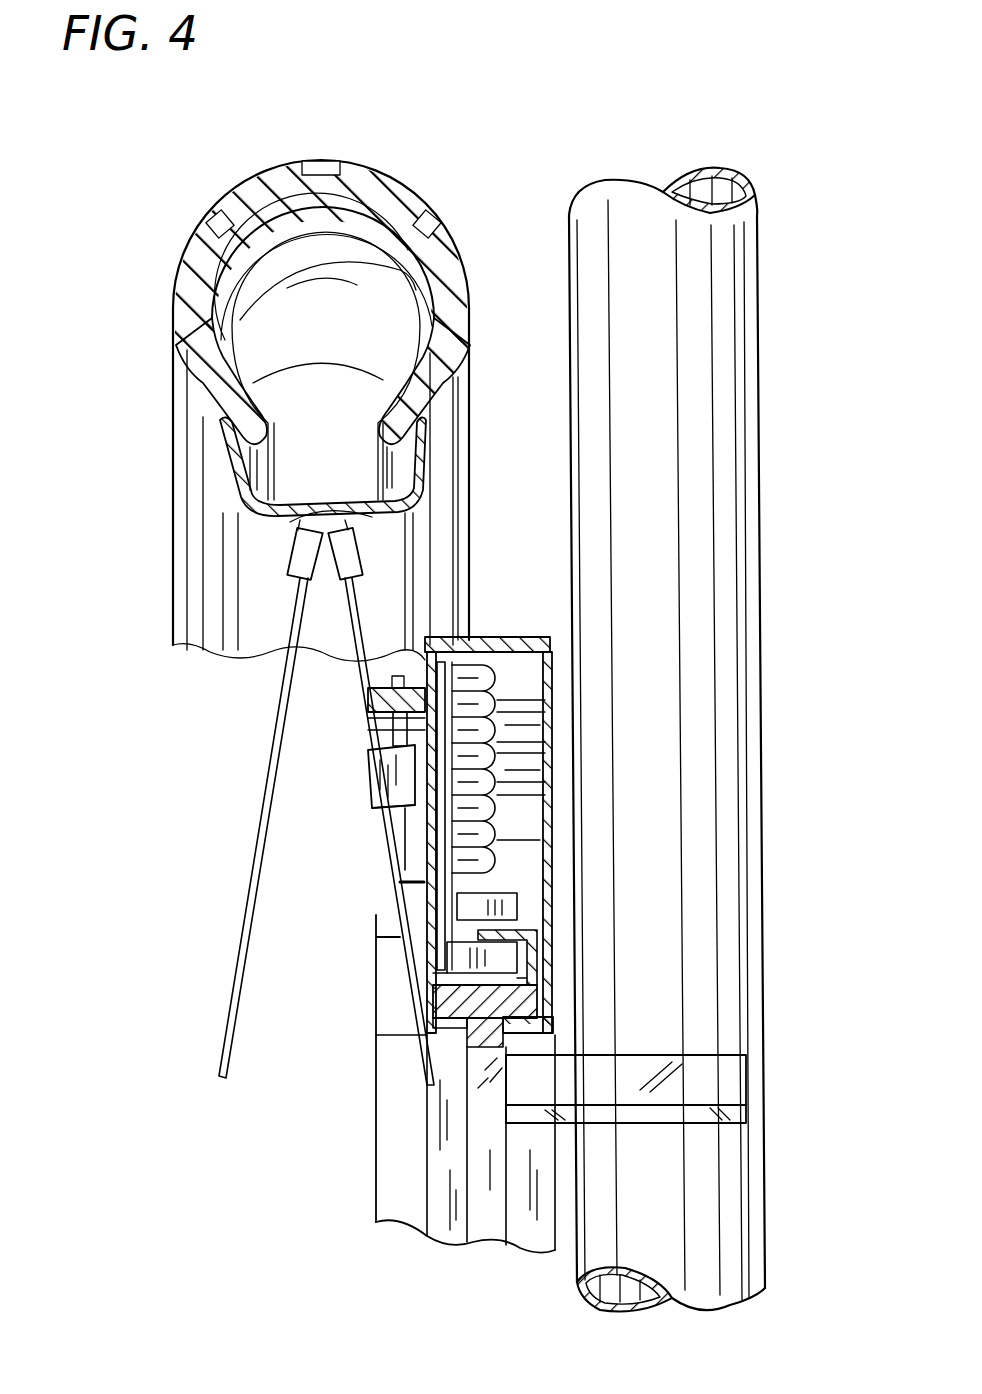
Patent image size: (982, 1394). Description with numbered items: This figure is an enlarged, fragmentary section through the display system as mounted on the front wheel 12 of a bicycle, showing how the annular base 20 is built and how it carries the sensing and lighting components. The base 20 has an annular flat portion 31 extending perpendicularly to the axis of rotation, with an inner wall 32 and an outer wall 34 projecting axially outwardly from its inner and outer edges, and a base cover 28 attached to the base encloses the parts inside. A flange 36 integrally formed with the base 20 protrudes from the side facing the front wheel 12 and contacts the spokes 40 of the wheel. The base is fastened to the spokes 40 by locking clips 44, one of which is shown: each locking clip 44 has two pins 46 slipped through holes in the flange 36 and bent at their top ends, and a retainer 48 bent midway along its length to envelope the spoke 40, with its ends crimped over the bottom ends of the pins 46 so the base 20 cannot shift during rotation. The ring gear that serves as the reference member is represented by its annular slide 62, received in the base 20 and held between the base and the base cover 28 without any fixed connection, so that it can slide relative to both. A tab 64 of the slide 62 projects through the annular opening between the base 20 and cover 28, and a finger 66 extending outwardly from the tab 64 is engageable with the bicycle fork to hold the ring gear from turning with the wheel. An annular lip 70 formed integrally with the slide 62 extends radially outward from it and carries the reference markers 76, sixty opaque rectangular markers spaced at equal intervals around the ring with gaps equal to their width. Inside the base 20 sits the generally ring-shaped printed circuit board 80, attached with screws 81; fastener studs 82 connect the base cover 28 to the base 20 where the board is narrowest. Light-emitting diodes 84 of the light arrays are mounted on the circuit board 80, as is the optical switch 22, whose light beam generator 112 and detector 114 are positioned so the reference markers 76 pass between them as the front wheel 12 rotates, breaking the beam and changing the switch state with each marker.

The front wheel 12 is at (243, 568).
The base 20 is at (525, 816).
The optical switch 22 is at (432, 945).
The base cover 28 is at (538, 830).
The annular flat portion 31 is at (432, 848).
The inner wall 32 is at (440, 1040).
The outer wall 34 is at (532, 640).
The flange 36 is at (400, 678).
The spokes 40 is at (395, 918).
The locking clip 44 is at (362, 766).
The pins 46 is at (393, 738).
The retainer 48 is at (372, 792).
The annular slide 62 is at (538, 998).
The tab 64 is at (418, 1125).
The finger 66 is at (690, 1125).
The annular lip 70 is at (522, 950).
The reference markers 76 is at (442, 985).
The printed circuit board 80 is at (445, 1000).
The screws 81 is at (434, 880).
The fastener studs 82 is at (514, 700).
The light-emitting diodes 84 is at (500, 800).
The light beam generator 112 is at (520, 908).
The detector 114 is at (530, 968).